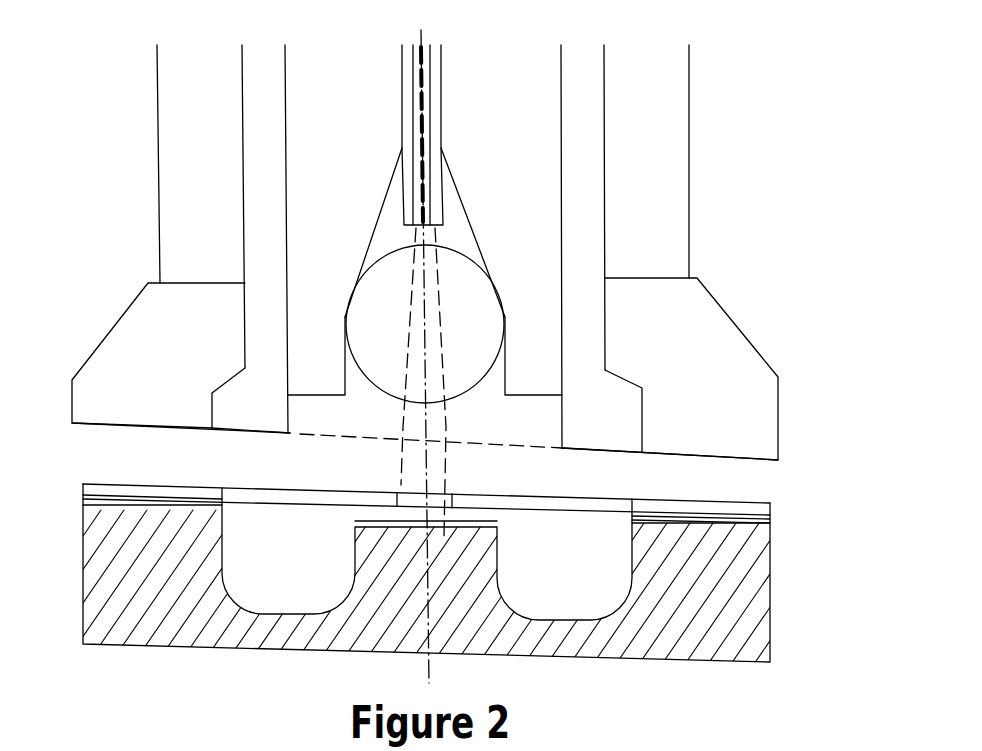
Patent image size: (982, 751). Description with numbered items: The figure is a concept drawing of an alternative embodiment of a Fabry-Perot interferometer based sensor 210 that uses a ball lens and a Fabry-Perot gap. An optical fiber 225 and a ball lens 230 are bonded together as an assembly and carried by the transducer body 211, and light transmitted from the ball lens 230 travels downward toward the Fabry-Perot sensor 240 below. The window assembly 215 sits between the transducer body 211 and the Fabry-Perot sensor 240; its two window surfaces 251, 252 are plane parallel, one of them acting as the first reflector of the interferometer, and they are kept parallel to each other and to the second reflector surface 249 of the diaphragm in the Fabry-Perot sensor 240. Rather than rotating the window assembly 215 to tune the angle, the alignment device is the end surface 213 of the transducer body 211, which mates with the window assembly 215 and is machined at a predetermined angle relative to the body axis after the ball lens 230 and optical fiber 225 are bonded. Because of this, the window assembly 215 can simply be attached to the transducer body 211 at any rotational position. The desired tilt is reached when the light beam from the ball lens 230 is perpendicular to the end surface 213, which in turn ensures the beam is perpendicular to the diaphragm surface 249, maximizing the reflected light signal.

The Fabry-Perot interferometer based sensor 210 is at (775, 306).
The transducer body 211 is at (113, 358).
The end surface of the transducer body 213 is at (107, 427).
The optical fiber 225 is at (438, 205).
The ball lens 230 is at (507, 317).
The Fabry-Perot sensor 240 is at (464, 578).
The window surface 251 is at (432, 492).
The window assembly 215 is at (765, 510).
The second reflector surface 249 is at (417, 527).
The window surface 252 is at (447, 520).